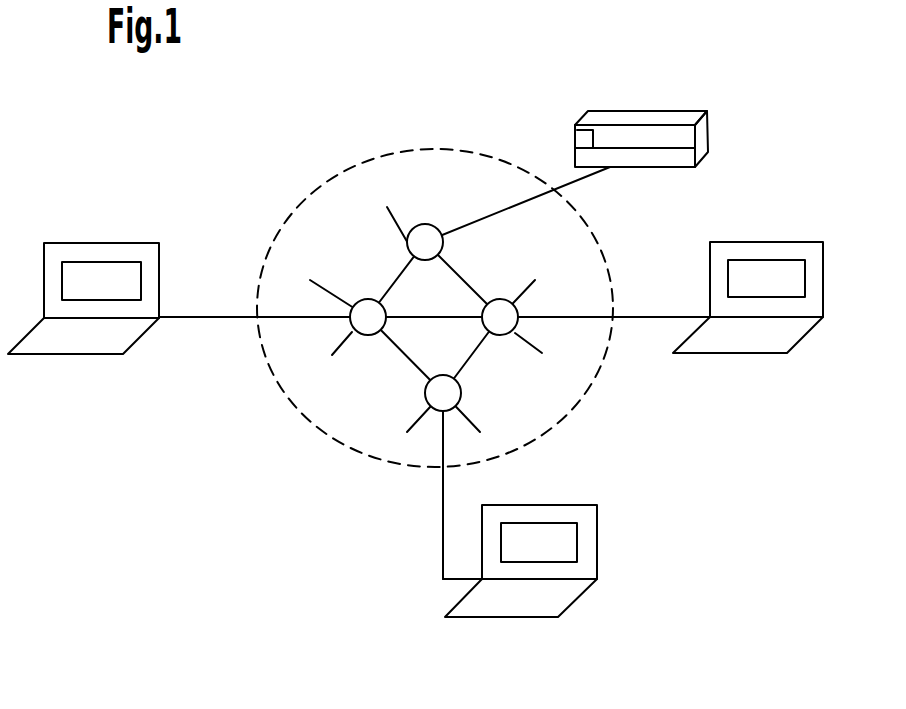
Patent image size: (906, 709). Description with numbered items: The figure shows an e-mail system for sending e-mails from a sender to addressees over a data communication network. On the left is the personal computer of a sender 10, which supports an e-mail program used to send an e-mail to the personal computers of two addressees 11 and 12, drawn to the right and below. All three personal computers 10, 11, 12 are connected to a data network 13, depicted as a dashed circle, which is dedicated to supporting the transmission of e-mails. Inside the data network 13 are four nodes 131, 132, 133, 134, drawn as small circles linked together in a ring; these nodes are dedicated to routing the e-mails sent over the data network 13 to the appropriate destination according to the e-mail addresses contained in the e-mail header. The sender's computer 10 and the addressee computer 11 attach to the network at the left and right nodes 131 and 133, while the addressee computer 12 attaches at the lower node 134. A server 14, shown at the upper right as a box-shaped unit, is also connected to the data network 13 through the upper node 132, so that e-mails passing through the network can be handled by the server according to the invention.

The personal computer of a sender 10 is at (73, 354).
The personal computer of an addressee 11 is at (748, 353).
The personal computer of an addressee 12 is at (515, 618).
The data network 13 is at (403, 150).
The server 14 is at (650, 111).
The node 131 is at (367, 335).
The node 132 is at (443, 240).
The node 133 is at (503, 334).
The node 134 is at (460, 401).